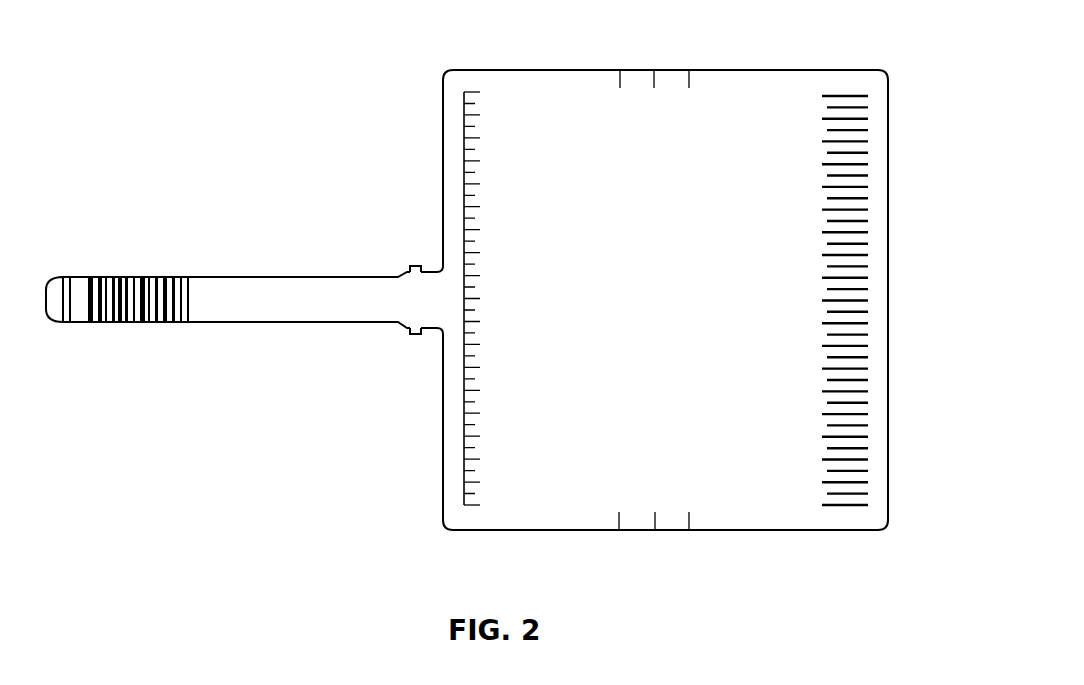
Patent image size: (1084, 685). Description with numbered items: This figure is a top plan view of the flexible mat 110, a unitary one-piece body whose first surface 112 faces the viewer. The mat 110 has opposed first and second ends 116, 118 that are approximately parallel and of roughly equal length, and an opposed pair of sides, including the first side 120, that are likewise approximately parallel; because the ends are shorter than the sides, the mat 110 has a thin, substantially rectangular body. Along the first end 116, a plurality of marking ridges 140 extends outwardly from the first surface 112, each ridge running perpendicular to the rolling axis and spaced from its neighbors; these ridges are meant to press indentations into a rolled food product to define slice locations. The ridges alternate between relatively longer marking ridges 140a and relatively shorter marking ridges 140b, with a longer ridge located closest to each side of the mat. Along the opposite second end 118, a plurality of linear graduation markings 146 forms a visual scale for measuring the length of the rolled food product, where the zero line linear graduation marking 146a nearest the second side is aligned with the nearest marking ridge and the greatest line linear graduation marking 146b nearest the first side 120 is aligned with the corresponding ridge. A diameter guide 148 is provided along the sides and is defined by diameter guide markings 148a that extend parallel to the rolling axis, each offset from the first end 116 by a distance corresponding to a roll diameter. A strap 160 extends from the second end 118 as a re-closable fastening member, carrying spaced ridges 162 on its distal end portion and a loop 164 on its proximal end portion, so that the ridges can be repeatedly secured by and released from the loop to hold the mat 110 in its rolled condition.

The flexible mat 110 is at (553, 531).
The first surface 112 is at (775, 88).
The first end 116 is at (890, 315).
The second end 118 is at (443, 457).
The first side 120 is at (555, 70).
The marking ridges 140 is at (822, 188).
The relatively longer marking ridges 140a is at (843, 505).
The relatively shorter marking ridges 140b is at (857, 493).
The linear graduation markings 146 is at (480, 412).
The zero line linear graduation marking 146a is at (472, 508).
The greatest line linear graduation marking 146b is at (467, 92).
The diameter guide 148 is at (652, 78).
The diameter guide markings 148a is at (618, 77).
The strap 160 is at (283, 277).
The spaced ridges 162 is at (80, 322).
The loop 164 is at (412, 335).